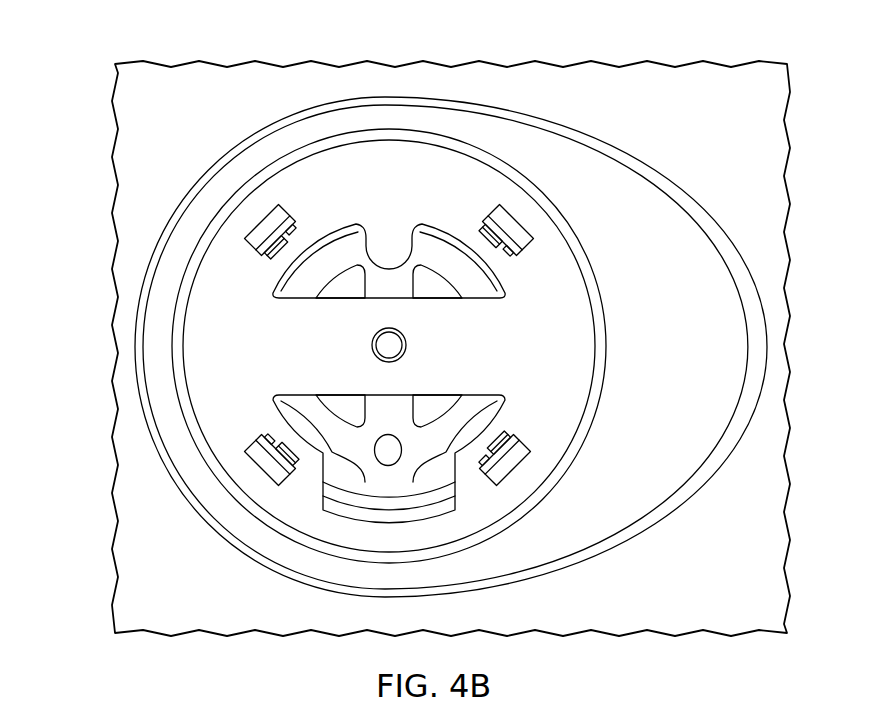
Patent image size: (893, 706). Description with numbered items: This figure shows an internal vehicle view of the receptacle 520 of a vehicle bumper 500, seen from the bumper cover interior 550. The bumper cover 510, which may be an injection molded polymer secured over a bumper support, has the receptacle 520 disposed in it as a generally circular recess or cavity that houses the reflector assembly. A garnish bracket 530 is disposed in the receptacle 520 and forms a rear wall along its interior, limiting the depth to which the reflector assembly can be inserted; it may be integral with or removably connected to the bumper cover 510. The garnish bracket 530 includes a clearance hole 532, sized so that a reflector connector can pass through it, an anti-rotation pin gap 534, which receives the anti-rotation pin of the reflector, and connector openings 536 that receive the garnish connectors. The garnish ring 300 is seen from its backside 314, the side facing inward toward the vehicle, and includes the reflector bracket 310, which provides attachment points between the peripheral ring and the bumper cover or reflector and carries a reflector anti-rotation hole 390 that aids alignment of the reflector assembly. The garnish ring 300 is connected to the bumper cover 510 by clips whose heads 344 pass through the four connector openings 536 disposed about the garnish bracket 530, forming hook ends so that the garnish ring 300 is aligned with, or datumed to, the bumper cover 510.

The vehicle bumper 500 is at (435, 320).
The bumper cover 510 is at (128, 602).
The receptacle 520 is at (740, 340).
The garnish bracket 530 is at (200, 371).
The bumper cover interior 550 is at (672, 540).
The garnish ring 300 is at (427, 248).
The backside of the garnish ring 314 is at (348, 248).
The reflector bracket 310 is at (295, 396).
The reflector anti-rotation hole 390 is at (401, 437).
The clearance hole 532 is at (360, 343).
The anti-rotation pin gap 534 is at (345, 514).
The head 344 is at (268, 238).
The connector openings 536 is at (262, 252).